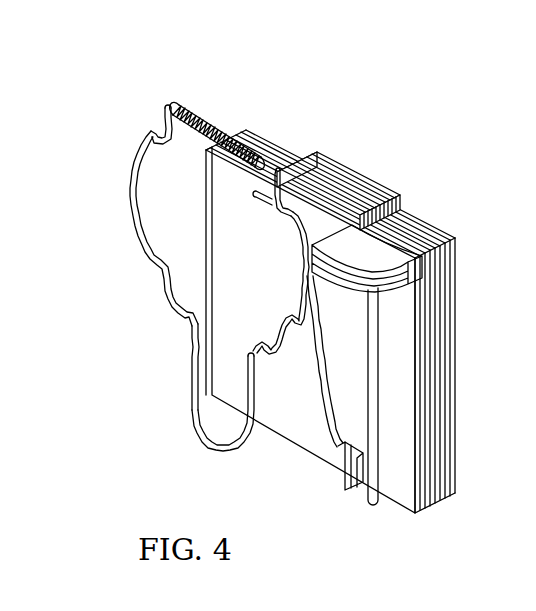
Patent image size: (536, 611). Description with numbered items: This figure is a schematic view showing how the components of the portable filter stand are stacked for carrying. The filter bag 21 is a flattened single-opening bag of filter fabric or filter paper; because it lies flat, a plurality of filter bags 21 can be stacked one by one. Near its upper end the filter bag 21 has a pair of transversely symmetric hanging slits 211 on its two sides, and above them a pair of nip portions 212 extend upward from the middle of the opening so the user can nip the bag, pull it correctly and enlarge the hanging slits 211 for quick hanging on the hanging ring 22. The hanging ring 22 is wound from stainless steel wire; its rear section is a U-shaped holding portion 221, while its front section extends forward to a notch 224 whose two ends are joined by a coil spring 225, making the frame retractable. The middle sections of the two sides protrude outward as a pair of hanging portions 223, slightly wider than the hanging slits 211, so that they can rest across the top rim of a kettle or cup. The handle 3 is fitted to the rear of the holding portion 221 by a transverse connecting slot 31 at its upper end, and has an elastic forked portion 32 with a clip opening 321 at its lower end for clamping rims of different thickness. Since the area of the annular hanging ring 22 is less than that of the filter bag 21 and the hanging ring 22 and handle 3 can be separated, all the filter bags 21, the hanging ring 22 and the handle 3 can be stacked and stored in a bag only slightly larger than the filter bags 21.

The filter bag 21 is at (302, 424).
The hanging slits 211 is at (320, 228).
The nip portions 212 is at (357, 172).
The hanging ring 22 is at (175, 256).
The holding portion 221 is at (192, 337).
The hanging portions 223 is at (135, 247).
The notch 224 is at (178, 110).
The coil spring 225 is at (232, 135).
The handle 3 is at (324, 387).
The connecting slot 31 is at (338, 280).
The forked portion 32 is at (317, 419).
The clip opening 321 is at (355, 492).